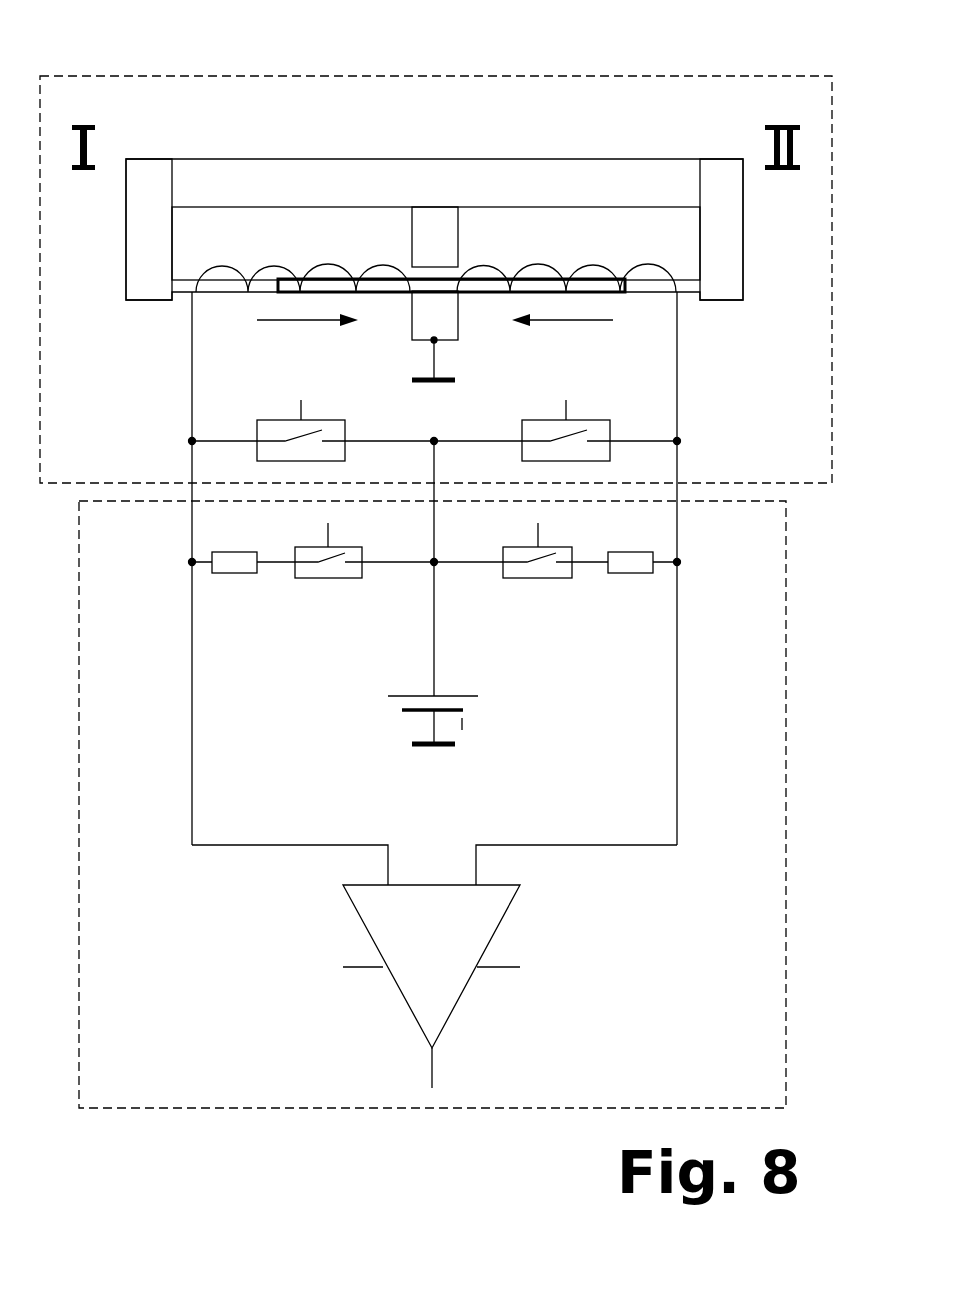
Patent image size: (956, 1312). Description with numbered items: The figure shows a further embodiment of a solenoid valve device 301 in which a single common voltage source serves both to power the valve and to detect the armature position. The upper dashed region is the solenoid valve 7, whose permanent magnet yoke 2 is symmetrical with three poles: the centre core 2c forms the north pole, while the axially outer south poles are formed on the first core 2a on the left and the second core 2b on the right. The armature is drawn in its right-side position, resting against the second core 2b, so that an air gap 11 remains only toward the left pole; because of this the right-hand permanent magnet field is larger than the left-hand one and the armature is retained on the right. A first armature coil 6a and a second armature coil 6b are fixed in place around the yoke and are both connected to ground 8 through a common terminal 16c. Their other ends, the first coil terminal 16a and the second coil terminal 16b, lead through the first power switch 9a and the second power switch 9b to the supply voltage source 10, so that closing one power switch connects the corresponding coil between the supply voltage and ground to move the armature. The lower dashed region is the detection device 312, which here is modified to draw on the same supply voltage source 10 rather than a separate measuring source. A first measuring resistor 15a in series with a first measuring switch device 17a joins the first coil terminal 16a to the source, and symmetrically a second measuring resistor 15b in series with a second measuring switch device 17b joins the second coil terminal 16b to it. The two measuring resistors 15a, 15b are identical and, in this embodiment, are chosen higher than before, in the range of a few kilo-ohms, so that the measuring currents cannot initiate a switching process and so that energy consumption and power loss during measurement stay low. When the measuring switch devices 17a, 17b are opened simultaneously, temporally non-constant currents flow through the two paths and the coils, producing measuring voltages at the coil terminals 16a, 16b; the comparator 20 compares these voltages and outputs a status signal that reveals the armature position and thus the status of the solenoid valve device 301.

The solenoid valve device 301 is at (466, 1142).
The solenoid valve 7 is at (113, 98).
The permanent magnet yoke 2 is at (155, 183).
The first core 2a is at (188, 290).
The second core 2b is at (680, 290).
The centre core 2c is at (452, 238).
The air gap 11 is at (262, 272).
The first armature coil 6a is at (312, 272).
The second armature coil 6b is at (610, 272).
The first coil terminal 16a is at (192, 297).
The second coil terminal 16b is at (680, 295).
The common terminal 16c is at (430, 342).
The ground 8 is at (456, 378).
The first power switch 9a is at (265, 420).
The second power switch 9b is at (600, 420).
The detection device 312 is at (112, 1108).
The first measuring resistor 15a is at (245, 573).
The second measuring resistor 15b is at (637, 573).
The first measuring switch device 17a is at (330, 578).
The second measuring switch device 17b is at (560, 578).
The supply voltage source 10 is at (460, 704).
The comparator 20 is at (420, 988).